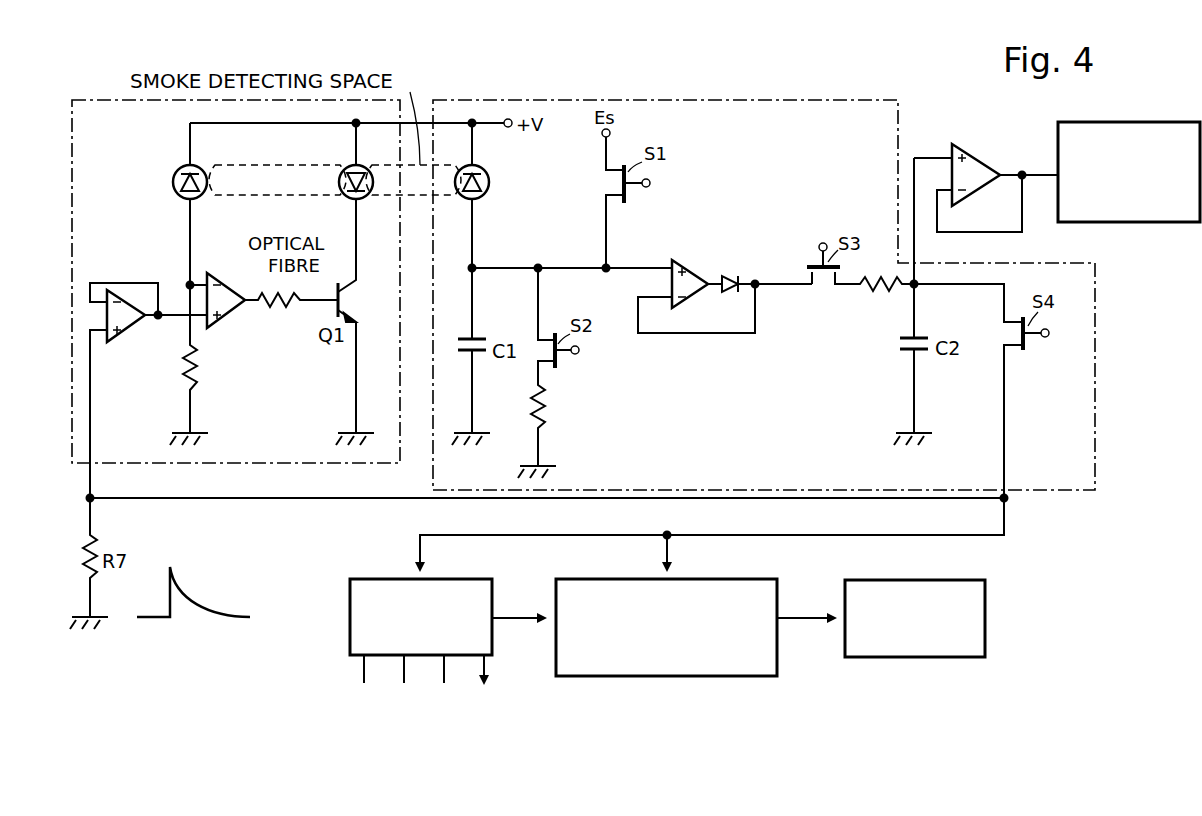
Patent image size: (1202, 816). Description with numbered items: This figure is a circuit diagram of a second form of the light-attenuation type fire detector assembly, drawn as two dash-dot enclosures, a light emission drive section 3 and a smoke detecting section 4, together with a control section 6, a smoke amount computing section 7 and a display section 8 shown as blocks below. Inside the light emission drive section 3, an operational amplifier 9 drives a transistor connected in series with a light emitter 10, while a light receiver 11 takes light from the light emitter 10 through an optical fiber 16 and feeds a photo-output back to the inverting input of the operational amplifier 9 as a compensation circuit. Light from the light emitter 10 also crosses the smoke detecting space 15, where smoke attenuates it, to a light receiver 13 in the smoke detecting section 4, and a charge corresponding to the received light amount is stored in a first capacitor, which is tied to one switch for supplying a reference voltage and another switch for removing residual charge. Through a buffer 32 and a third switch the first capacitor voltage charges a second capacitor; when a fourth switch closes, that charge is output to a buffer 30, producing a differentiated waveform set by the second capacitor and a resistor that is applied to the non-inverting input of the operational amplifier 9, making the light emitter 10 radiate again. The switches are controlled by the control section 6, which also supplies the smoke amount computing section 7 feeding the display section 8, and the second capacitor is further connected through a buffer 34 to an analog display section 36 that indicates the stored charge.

The light emission drive section 3 is at (105, 100).
The smoke detecting section 4 is at (592, 100).
The control section 6 is at (496, 600).
The smoke amount computing section 7 is at (781, 600).
The display section 8 is at (988, 602).
The operational amplifier 9 is at (228, 290).
The light emitter 10 is at (344, 172).
The light receiver 11 is at (173, 184).
The light receiver 13 is at (487, 190).
The smoke detecting space 15 is at (398, 197).
The optical fiber 16 is at (300, 197).
The buffer 30 is at (124, 335).
The buffer 32 is at (694, 272).
The buffer 34 is at (978, 150).
The analog display section 36 is at (1157, 222).